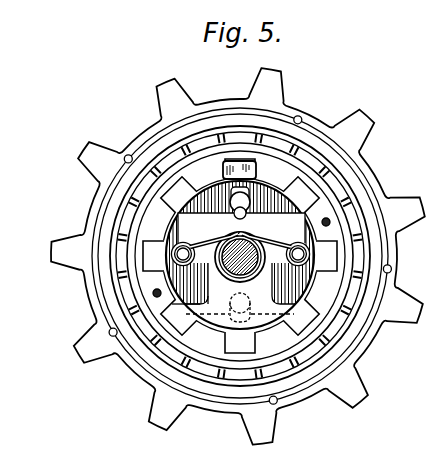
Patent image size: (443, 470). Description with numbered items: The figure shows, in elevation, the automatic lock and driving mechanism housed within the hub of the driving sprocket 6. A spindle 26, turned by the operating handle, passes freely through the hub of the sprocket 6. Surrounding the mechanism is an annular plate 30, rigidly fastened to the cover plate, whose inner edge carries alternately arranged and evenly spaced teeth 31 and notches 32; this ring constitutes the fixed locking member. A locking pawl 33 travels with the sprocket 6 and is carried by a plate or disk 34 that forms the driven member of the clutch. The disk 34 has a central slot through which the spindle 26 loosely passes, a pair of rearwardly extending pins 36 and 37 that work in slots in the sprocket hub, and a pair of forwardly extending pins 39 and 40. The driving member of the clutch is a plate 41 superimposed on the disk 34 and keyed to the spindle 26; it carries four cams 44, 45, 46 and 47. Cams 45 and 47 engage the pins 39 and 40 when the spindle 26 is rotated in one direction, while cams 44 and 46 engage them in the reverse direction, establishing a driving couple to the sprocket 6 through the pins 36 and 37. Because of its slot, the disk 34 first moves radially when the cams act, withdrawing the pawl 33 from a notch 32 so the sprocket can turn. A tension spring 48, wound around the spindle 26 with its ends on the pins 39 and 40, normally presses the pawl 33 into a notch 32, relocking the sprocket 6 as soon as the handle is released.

The sprocket 6 is at (234, 404).
The spindle 26 is at (240, 268).
The annular plate 30 is at (311, 311).
The teeth 31 is at (325, 275).
The notches 32 is at (331, 308).
The locking pawl 33 is at (252, 162).
The plate or disk 34 is at (217, 197).
The rearwardly extending pin 36 is at (229, 214).
The rearwardly extending pin 37 is at (245, 306).
The forwardly extending pin 39 is at (180, 253).
The forwardly extending pin 40 is at (300, 252).
The plate 41 is at (217, 300).
The cam 44 is at (290, 313).
The cam 45 is at (183, 313).
The cam 46 is at (187, 223).
The cam 47 is at (289, 228).
The tension spring 48 is at (227, 277).